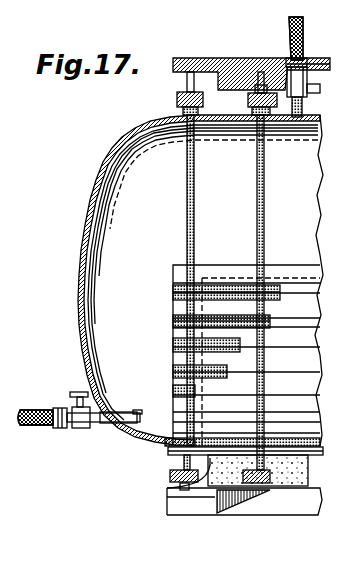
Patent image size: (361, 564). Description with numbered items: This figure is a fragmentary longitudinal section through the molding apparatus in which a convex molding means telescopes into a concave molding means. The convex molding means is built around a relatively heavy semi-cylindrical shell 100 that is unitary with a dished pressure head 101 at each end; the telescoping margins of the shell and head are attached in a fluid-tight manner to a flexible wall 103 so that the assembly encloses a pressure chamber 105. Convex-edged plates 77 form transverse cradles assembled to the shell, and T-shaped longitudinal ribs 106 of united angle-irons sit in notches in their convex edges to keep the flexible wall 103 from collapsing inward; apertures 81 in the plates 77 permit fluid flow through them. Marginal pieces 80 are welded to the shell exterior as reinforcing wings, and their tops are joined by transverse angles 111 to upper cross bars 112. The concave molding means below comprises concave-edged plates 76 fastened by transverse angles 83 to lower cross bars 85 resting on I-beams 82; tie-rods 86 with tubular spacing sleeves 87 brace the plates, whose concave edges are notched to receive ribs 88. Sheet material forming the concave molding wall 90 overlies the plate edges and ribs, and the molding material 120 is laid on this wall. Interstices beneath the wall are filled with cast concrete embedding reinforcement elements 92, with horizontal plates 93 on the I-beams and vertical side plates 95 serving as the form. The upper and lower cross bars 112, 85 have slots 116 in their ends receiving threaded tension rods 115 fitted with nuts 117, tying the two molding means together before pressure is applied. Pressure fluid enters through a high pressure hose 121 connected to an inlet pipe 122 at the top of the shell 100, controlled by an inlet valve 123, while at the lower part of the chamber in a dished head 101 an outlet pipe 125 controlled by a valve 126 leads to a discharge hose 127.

The concave-edged plate 76 is at (252, 460).
The convex-edged plate 77 is at (187, 184).
The marginal piece 80 is at (250, 118).
The aperture 81 is at (177, 392).
The I-beam 82 is at (240, 507).
The transverse angle 83 is at (183, 463).
The cross bar 85 is at (170, 477).
The tie-rod 86 is at (354, 329).
The tubular spacing sleeve 87 is at (354, 307).
The rib 88 is at (286, 478).
The concave molding wall 90 is at (312, 448).
The reinforcement element 92 is at (351, 373).
The horizontal plate 93 is at (307, 484).
The vertical side plate 95 is at (265, 352).
The shell 100 is at (211, 130).
The dished pressure head 101 is at (104, 166).
The flexible wall 103 is at (178, 336).
The pressure chamber 105 is at (223, 222).
The rib 106 is at (180, 290).
The transverse angle 111 is at (353, 132).
The upper cross bar 112 is at (177, 99).
The tension rod 115 is at (212, 57).
The slot 116 is at (183, 112).
The nut 117 is at (180, 88).
The molding material 120 is at (303, 438).
The high pressure hose 121 is at (304, 27).
The inlet pipe 122 is at (302, 106).
The inlet valve 123 is at (305, 80).
The outlet pipe 125 is at (108, 422).
The valve 126 is at (75, 425).
The discharge hose 127 is at (36, 409).